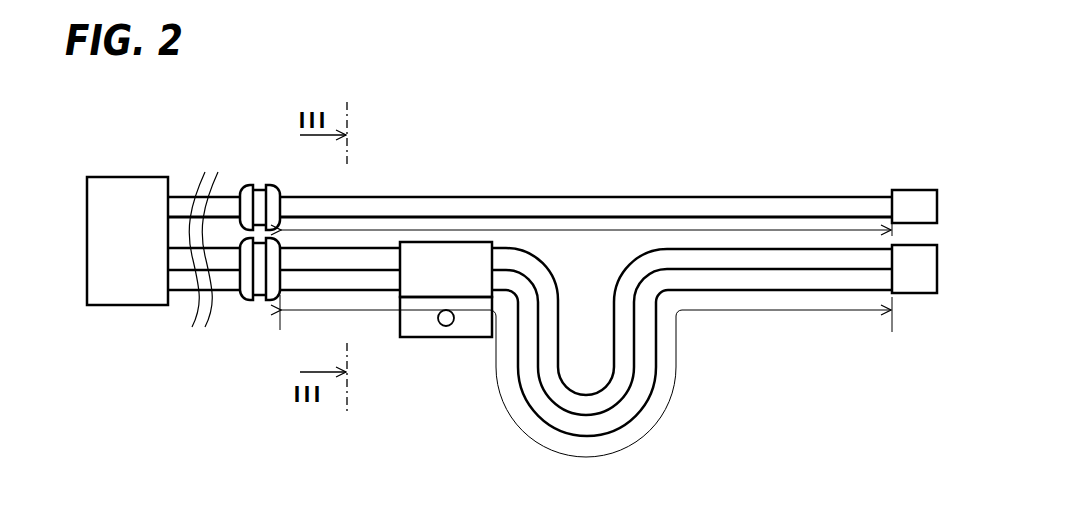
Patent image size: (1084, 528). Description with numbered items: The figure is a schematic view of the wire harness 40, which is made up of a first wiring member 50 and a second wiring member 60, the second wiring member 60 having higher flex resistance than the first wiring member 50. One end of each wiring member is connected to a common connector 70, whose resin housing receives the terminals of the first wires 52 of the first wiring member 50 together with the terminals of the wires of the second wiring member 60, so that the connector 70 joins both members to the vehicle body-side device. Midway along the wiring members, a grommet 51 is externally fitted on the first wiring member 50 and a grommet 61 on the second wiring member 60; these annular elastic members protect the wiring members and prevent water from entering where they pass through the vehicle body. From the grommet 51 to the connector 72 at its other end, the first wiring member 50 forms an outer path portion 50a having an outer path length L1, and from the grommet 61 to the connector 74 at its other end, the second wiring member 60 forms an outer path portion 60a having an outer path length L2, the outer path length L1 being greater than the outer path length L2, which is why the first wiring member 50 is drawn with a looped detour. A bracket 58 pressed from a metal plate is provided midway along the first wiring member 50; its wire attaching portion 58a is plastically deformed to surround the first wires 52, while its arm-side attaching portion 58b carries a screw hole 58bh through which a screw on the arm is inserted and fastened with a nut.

The wire harness 40 is at (449, 149).
The first wiring member 50 is at (530, 335).
The outer path portion 50a is at (560, 328).
The grommet 51 is at (245, 300).
The first wires 52 is at (641, 292).
The bracket 58 is at (425, 345).
The wire attaching portion 58a is at (423, 287).
The arm-side attaching portion 58b is at (446, 355).
The screw hole 58bh is at (465, 351).
The second wiring member 60 is at (530, 181).
The outer path portion 60a is at (545, 197).
The grommet 61 is at (245, 185).
The connector 70 is at (127, 177).
The connector 72 is at (912, 293).
The connector 74 is at (913, 190).
The outer path length L1 is at (793, 310).
The outer path length L2 is at (587, 230).